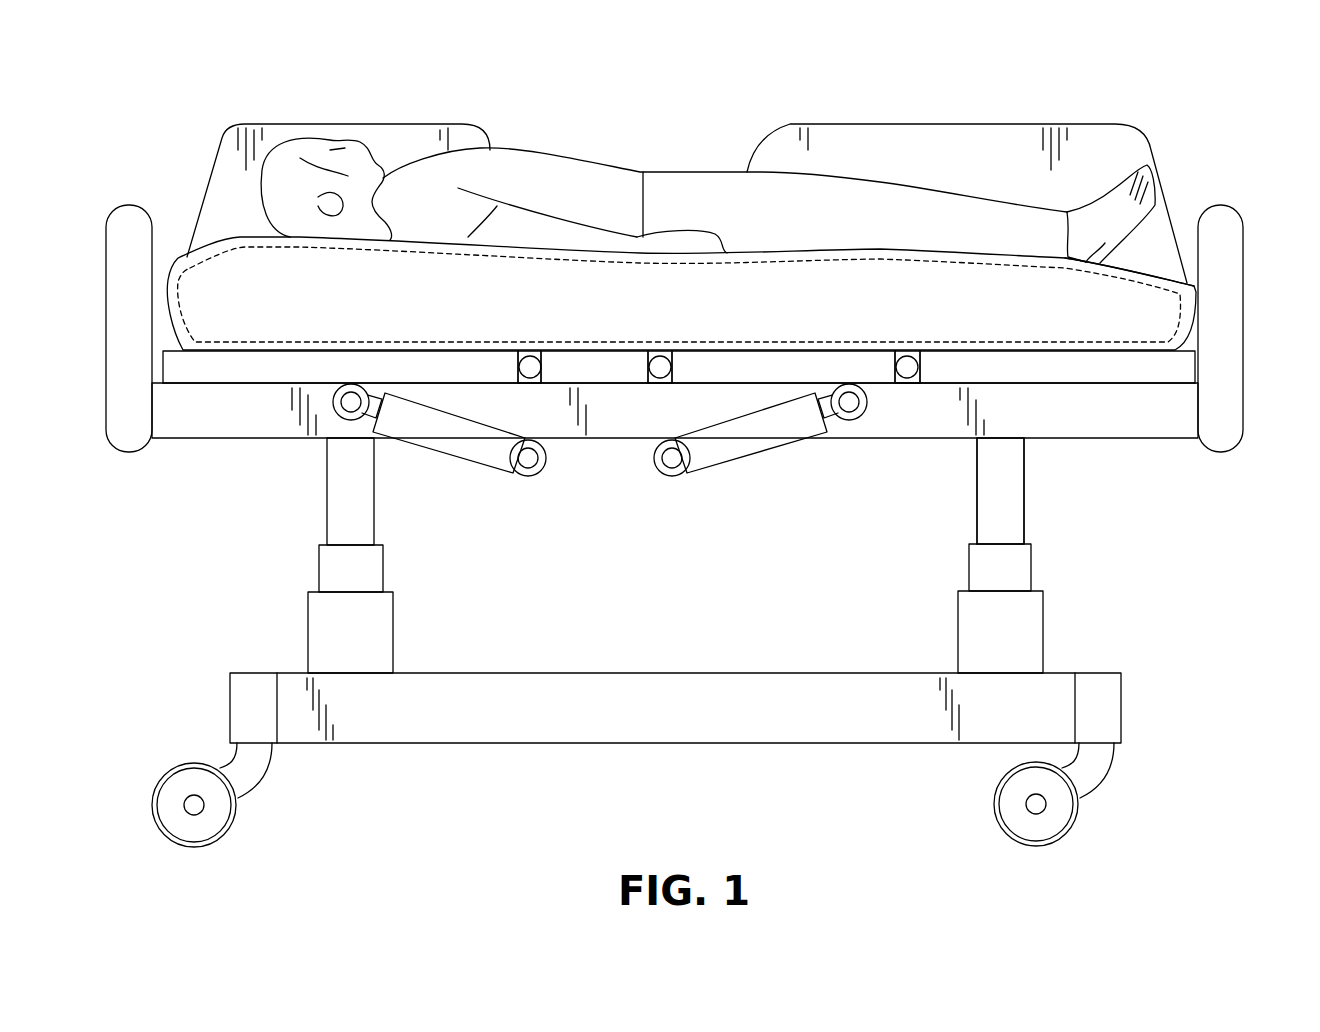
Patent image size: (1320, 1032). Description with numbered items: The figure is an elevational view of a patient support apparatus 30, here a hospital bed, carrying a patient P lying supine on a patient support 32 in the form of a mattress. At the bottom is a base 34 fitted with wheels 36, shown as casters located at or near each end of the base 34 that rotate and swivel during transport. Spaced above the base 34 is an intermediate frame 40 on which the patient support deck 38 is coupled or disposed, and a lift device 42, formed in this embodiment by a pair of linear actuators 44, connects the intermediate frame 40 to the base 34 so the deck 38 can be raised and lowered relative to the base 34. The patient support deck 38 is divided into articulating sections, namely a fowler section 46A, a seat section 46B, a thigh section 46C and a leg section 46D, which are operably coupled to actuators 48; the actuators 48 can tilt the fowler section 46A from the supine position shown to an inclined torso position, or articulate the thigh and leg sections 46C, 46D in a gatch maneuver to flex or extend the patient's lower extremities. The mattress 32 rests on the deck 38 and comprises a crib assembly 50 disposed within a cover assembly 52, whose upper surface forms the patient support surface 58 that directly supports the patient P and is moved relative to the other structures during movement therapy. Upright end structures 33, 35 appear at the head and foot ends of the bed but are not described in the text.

The patient support apparatus 30 is at (430, 118).
The patient support 32 is at (236, 230).
The head end side panel 33 is at (152, 288).
The base 34 is at (1126, 706).
The foot end side panel 35 is at (1196, 302).
The wheels 36 is at (237, 800).
The patient support deck 38 is at (1138, 392).
The intermediate frame 40 is at (1080, 442).
The lift device 42 is at (318, 556).
The linear actuators 44 is at (307, 622).
The fowler section 46A is at (232, 365).
The seat section 46B is at (560, 370).
The thigh section 46C is at (782, 370).
The leg section 46D is at (947, 370).
The actuators 48 is at (448, 467).
The crib assembly 50 is at (1140, 270).
The cover assembly 52 is at (1168, 276).
The patient support surface 58 is at (193, 250).
The patient P is at (592, 160).